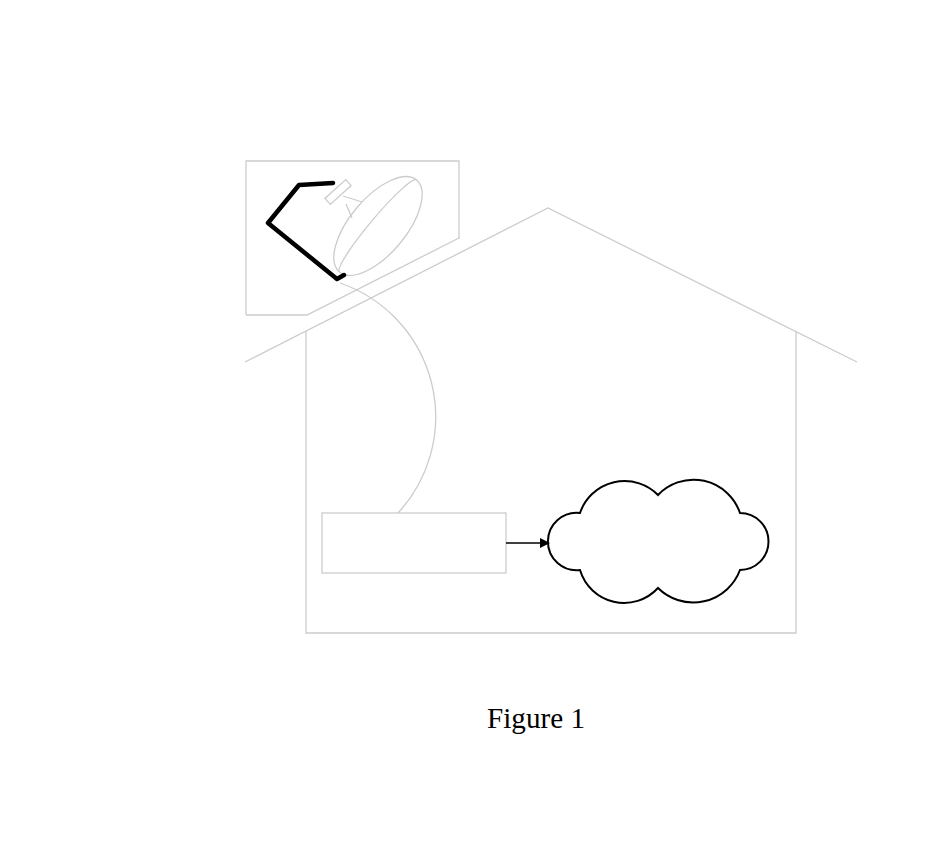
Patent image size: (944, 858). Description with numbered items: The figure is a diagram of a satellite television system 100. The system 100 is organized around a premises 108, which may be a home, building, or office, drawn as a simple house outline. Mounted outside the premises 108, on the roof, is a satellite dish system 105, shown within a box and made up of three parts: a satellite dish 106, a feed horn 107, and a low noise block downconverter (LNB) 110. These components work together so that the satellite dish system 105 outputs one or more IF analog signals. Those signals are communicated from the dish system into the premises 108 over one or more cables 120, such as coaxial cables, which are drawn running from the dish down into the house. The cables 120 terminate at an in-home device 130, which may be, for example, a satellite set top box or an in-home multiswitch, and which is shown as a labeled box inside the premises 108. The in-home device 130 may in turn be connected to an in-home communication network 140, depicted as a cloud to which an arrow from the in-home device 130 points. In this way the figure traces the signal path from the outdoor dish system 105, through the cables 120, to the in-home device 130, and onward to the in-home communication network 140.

The satellite television system 100 is at (100, 90).
The satellite dish system 105 is at (438, 161).
The satellite dish 106 is at (423, 194).
The feed horn 107 is at (343, 207).
The premises 108 is at (613, 238).
The low noise block downconverter (LNB) 110 is at (343, 180).
The cables 120 is at (428, 372).
The in-home device 130 is at (322, 543).
The in-home communication network 140 is at (623, 482).